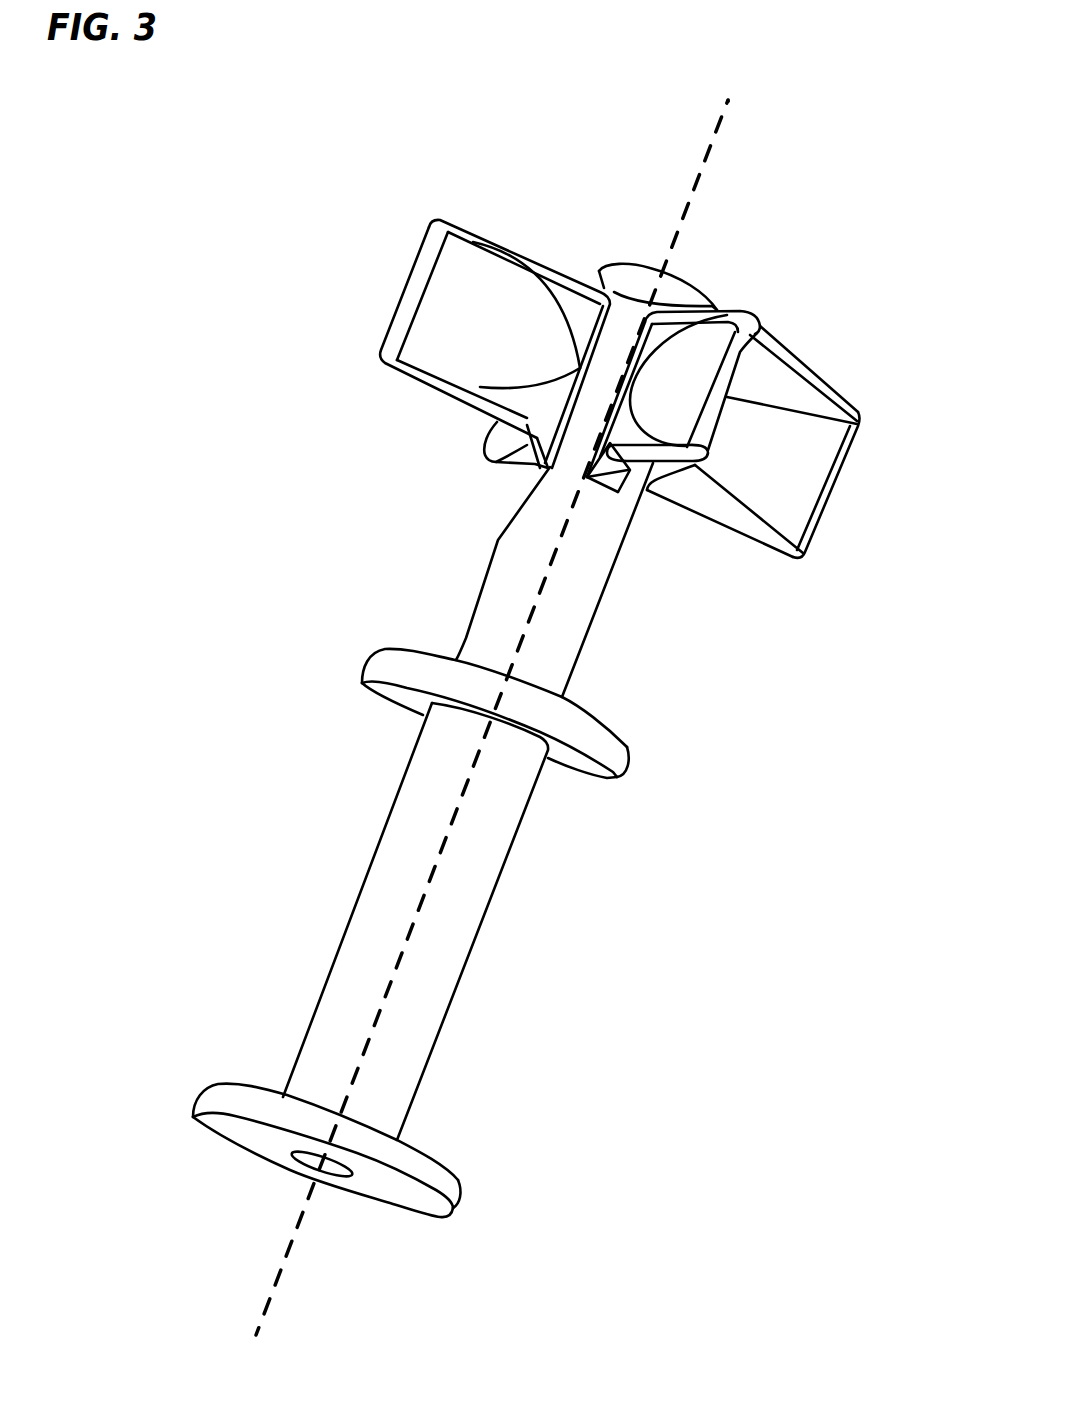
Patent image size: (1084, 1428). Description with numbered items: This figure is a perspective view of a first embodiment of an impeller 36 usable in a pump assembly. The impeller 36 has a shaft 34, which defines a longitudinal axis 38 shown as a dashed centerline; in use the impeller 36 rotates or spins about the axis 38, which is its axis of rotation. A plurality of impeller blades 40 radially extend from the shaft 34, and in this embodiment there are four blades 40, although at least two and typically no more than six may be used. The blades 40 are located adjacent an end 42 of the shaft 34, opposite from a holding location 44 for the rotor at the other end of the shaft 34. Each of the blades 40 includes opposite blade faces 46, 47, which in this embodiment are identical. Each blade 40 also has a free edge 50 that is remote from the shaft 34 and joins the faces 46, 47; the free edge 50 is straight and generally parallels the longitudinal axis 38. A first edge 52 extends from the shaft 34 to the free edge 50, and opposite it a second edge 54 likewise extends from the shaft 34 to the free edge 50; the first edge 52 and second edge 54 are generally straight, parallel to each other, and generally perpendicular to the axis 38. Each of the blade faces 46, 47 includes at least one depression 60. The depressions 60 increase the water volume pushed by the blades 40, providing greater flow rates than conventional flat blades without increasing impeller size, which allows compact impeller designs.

The shaft 34 is at (582, 652).
The impeller 36 is at (860, 176).
The longitudinal axis 38 is at (706, 170).
The impeller blade 40 is at (882, 290).
The end 42 is at (632, 268).
The holding location 44 is at (477, 933).
The blade face 46 is at (557, 297).
The blade face 47 is at (752, 385).
The free edge 50 is at (420, 257).
The first edge 52 is at (467, 232).
The second edge 54 is at (415, 382).
The depression 60 is at (437, 316).